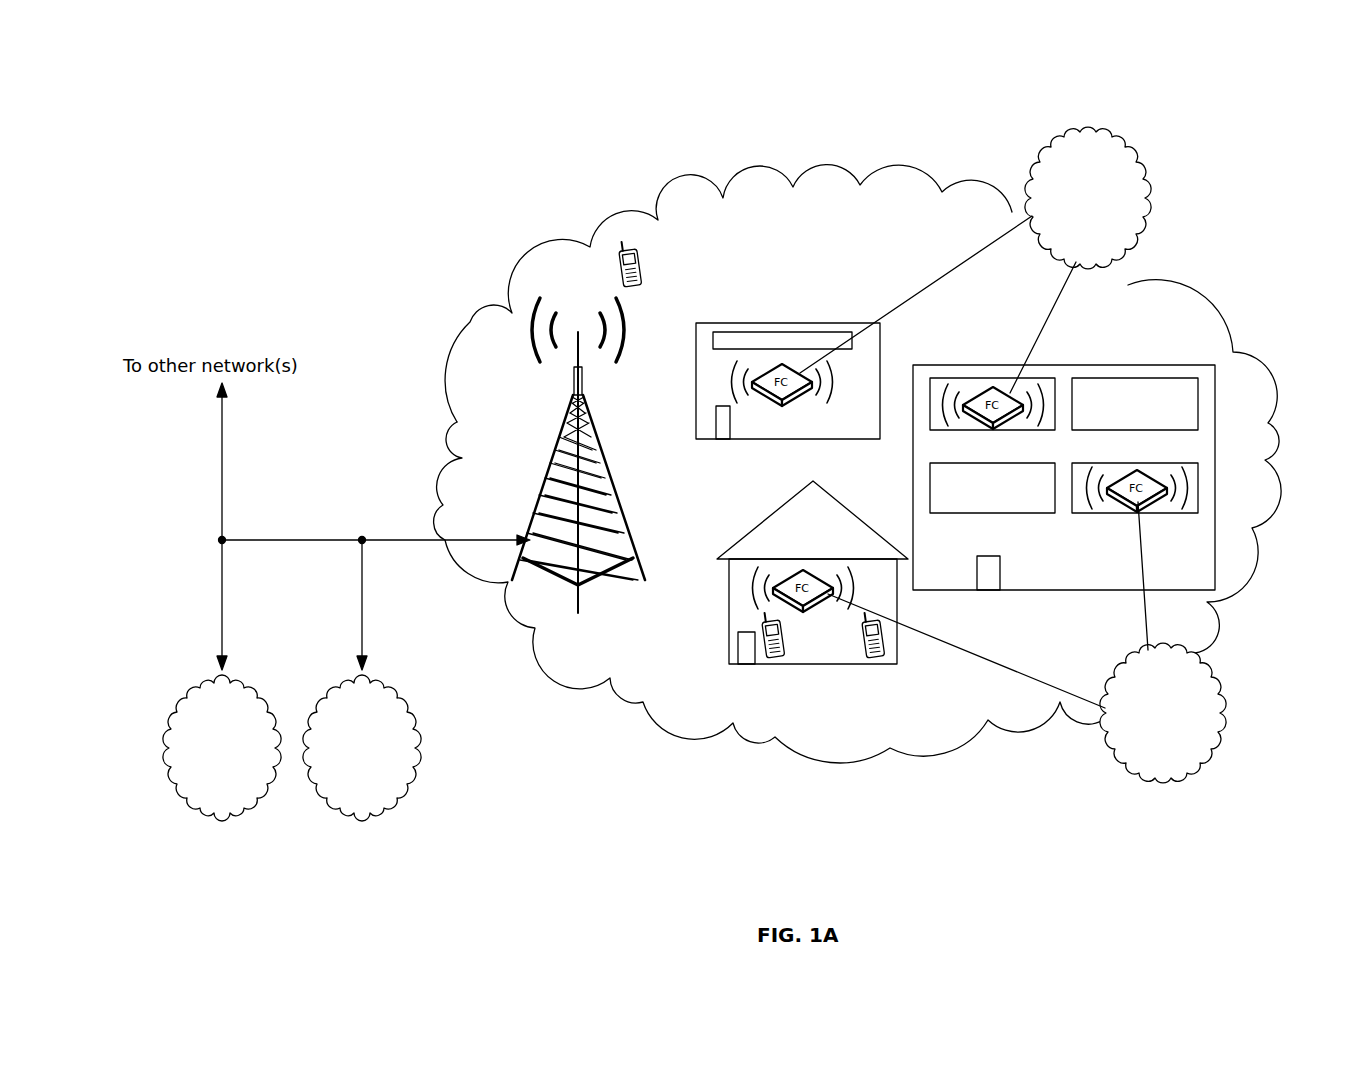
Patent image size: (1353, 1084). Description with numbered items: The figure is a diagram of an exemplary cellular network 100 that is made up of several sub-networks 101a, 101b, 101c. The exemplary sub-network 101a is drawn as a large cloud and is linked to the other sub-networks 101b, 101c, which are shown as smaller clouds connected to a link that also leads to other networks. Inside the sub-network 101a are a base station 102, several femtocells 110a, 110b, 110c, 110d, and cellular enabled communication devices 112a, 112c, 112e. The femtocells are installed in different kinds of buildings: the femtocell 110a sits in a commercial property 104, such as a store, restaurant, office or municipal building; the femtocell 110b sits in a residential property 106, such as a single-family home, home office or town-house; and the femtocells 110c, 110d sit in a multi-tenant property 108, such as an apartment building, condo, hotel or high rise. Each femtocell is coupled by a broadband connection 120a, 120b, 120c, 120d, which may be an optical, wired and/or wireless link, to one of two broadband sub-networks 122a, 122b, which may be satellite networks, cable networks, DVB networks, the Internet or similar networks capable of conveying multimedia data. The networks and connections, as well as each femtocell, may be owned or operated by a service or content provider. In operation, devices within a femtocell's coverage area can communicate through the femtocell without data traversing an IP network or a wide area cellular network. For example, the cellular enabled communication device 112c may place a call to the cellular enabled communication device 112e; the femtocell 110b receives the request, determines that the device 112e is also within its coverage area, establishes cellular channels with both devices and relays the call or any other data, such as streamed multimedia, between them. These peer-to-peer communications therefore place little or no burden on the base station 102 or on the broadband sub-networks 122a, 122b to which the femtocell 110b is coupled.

The cellular network 100 is at (197, 112).
The sub-network 101a is at (675, 180).
The sub-network 101b is at (222, 818).
The sub-network 101c is at (295, 540).
The base station 102 is at (596, 420).
The commercial property 104 is at (728, 322).
The residential property 106 is at (762, 510).
The multi-tenant property 108 is at (1220, 395).
The femtocell 110a is at (790, 400).
The femtocell 110b is at (808, 605).
The femtocell 110c is at (1010, 420).
The femtocell 110d is at (1150, 500).
The cellular enabled communication device 112a is at (641, 262).
The cellular enabled communication device 112c is at (784, 656).
The cellular enabled communication device 112e is at (884, 656).
The broadband connection 120a is at (922, 287).
The broadband connection 120b is at (1049, 316).
The broadband connection 120c is at (997, 661).
The broadband connection 120d is at (1143, 620).
The broadband sub-network 122a is at (1088, 198).
The broadband sub-network 122b is at (1163, 713).